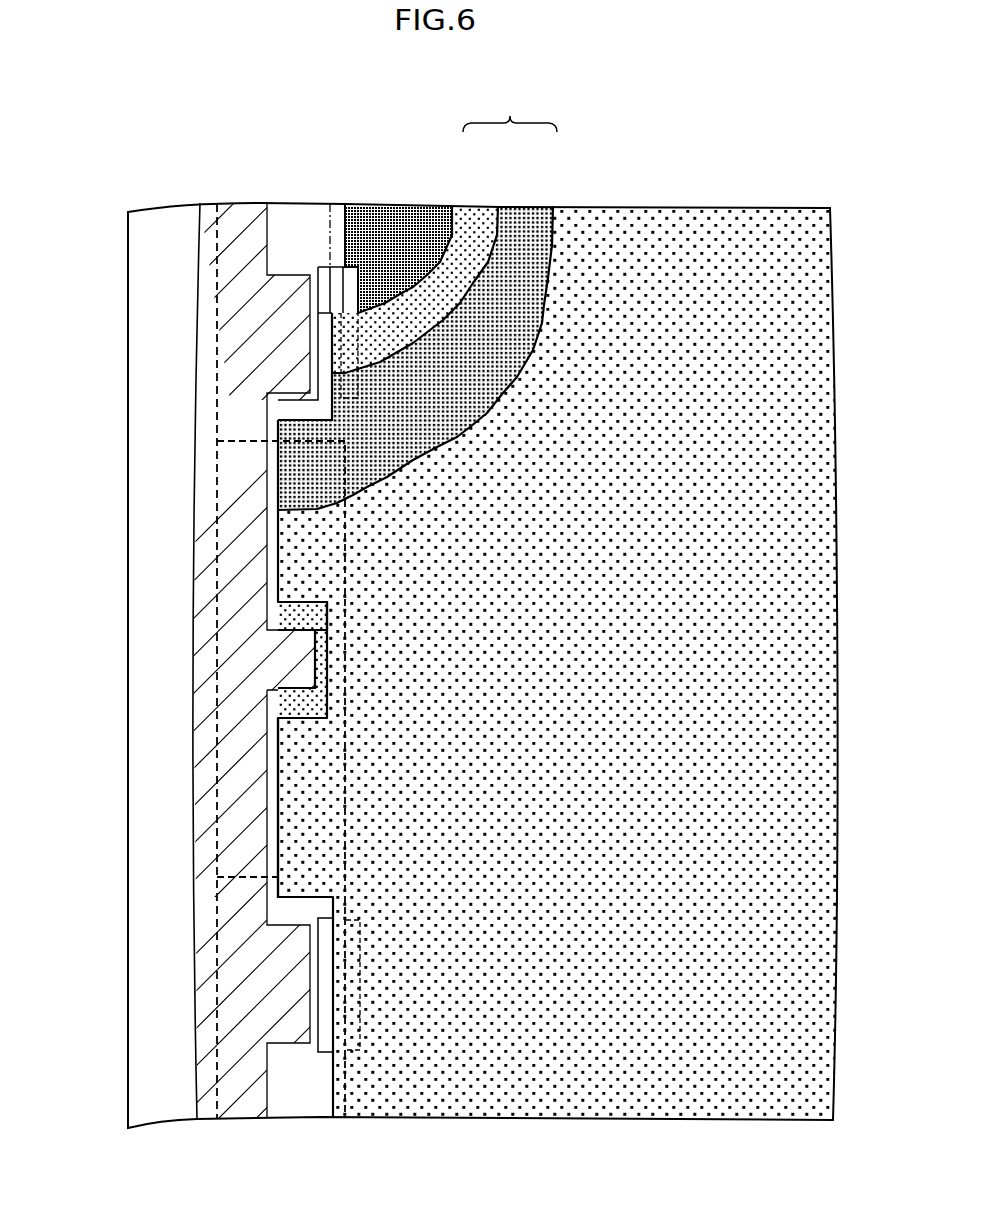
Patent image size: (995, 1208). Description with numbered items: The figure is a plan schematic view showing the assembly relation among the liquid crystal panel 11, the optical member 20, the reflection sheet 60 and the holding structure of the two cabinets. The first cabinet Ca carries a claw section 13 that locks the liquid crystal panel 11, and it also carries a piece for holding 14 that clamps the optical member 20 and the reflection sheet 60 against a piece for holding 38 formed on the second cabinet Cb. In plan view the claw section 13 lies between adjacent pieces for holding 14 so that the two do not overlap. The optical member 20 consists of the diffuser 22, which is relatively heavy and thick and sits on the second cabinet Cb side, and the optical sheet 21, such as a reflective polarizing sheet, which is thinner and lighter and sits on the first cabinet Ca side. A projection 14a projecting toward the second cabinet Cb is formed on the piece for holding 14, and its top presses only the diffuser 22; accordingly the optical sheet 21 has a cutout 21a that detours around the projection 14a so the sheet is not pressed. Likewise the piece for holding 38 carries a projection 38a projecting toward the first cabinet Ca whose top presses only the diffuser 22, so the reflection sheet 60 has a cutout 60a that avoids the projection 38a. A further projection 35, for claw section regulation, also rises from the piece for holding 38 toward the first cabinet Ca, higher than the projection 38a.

The first cabinet Ca is at (162, 227).
The second cabinet Cb is at (245, 222).
The liquid crystal panel 11 is at (422, 237).
The claw section 13 is at (365, 284).
The piece for holding 14 is at (305, 412).
The projection 14a is at (300, 608).
The optical member 20 is at (510, 105).
The optical sheet 21 is at (472, 235).
The cutout 21a is at (303, 714).
The diffuser 22 is at (525, 237).
The projection 35 is at (287, 330).
The piece for holding 38 is at (245, 638).
The projection 38a is at (292, 665).
The reflection sheet 60 is at (660, 235).
The cutout 60a is at (300, 710).